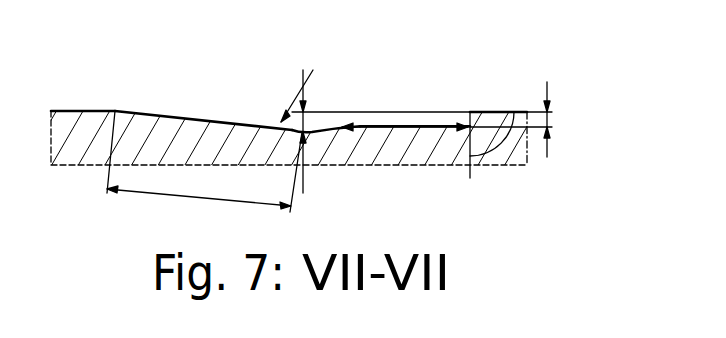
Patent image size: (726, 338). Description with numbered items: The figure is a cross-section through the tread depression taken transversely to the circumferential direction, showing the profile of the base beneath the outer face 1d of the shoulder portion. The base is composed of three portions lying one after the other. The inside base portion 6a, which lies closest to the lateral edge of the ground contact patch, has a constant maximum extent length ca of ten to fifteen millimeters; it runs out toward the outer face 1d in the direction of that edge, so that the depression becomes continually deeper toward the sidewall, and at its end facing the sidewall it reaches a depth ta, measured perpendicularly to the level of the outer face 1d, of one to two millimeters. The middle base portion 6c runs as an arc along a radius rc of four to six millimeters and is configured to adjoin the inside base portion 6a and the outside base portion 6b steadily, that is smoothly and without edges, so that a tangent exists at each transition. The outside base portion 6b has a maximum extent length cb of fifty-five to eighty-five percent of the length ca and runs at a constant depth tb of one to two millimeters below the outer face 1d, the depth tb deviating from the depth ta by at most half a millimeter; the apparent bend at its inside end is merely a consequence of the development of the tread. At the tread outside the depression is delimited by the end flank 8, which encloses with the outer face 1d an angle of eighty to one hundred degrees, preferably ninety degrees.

The outer face 1d is at (86, 111).
The inside base portion 6a is at (159, 115).
The middle base portion 6c is at (320, 132).
The outside base portion 6b is at (366, 126).
The end flank 8 is at (469, 112).
The maximum extent length ca is at (204, 170).
The maximum extent length cb is at (385, 127).
The depth ta is at (315, 139).
The depth tb is at (559, 119).
The radius rc is at (297, 93).